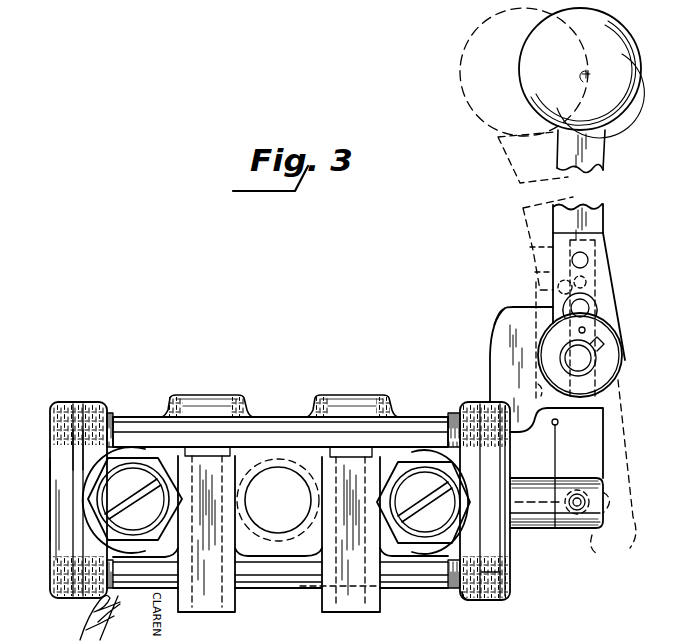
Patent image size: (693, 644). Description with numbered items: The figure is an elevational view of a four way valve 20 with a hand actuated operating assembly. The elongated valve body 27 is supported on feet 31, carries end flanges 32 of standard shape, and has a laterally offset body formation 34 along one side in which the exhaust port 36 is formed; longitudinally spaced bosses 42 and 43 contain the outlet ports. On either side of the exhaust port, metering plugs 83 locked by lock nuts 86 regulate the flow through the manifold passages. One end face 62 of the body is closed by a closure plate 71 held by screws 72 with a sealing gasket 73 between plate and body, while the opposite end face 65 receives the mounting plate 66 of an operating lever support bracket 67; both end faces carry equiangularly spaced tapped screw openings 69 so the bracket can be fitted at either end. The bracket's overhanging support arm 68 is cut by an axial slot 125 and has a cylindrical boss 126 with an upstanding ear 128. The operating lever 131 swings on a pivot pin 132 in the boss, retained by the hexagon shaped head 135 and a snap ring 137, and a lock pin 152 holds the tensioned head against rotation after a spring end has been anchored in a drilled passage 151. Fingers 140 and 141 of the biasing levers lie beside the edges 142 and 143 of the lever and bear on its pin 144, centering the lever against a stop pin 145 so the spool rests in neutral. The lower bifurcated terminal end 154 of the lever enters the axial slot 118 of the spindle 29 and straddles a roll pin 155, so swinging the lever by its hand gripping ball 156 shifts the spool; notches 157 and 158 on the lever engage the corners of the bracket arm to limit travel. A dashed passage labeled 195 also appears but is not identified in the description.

The valve 20 is at (133, 411).
The valve body 27 is at (273, 419).
The spindle 29 is at (516, 488).
The support feet 31 is at (217, 612).
The end flanges 32 is at (88, 598).
The body formation 34 is at (228, 451).
The exhaust port 36 is at (287, 482).
The boss 42 is at (214, 396).
The boss 43 is at (364, 398).
The end face 62 is at (82, 428).
The end face 65 is at (482, 575).
The mounting plate 66 is at (502, 595).
The operating lever support bracket 67 is at (484, 358).
The support arm 68 is at (503, 316).
The screw openings 69 is at (90, 403).
The closure plate 71 is at (54, 405).
The screws 72 is at (108, 442).
The sealing gasket 73 is at (74, 420).
The metering plugs 83 is at (152, 515).
The lock nuts 86 is at (180, 504).
The axial slot 118 is at (543, 527).
The slot 125 is at (546, 388).
The cylindrical boss 126 is at (622, 376).
The upstanding ear 128 is at (603, 261).
The operating lever 131 is at (604, 163).
The pivot pin 132 is at (582, 360).
The hexagon shaped head 135 is at (608, 352).
The snap ring 137 is at (582, 364).
The finger 140 is at (530, 249).
The finger 141 is at (606, 226).
The edge 142 is at (553, 228).
The edge 143 is at (602, 207).
The pin 144 is at (535, 272).
The stop pin 145 is at (581, 259).
The drilled passage 151 is at (584, 329).
The lock pin 152 is at (582, 308).
The bifurcated terminal end 154 is at (613, 472).
The roll pin 155 is at (577, 494).
The hand gripping ball 156 is at (638, 50).
The notch 157 is at (558, 423).
The notch 158 is at (556, 290).
The passage 195 is at (330, 586).